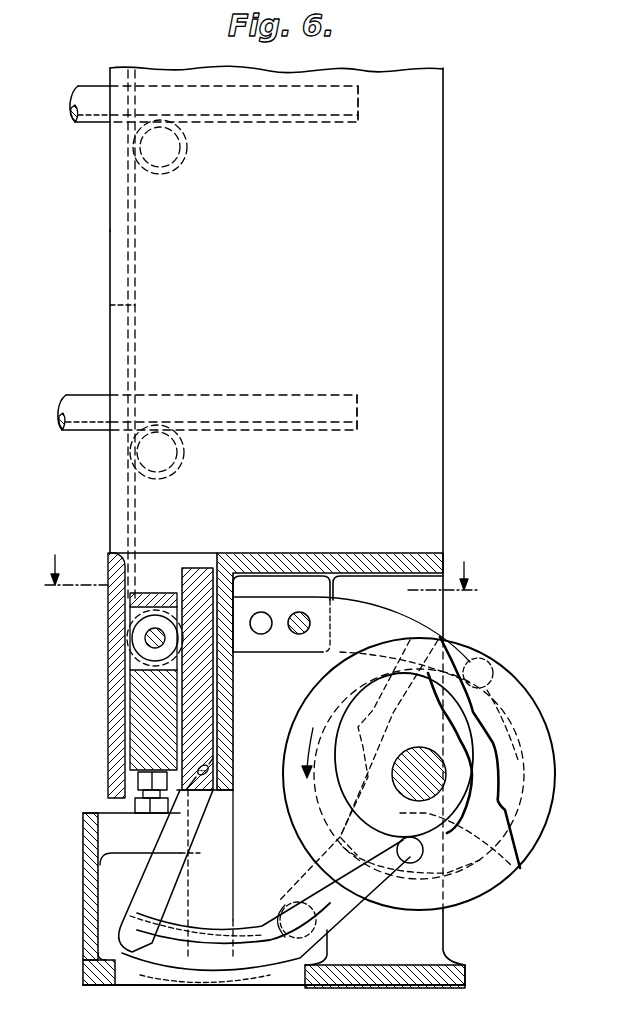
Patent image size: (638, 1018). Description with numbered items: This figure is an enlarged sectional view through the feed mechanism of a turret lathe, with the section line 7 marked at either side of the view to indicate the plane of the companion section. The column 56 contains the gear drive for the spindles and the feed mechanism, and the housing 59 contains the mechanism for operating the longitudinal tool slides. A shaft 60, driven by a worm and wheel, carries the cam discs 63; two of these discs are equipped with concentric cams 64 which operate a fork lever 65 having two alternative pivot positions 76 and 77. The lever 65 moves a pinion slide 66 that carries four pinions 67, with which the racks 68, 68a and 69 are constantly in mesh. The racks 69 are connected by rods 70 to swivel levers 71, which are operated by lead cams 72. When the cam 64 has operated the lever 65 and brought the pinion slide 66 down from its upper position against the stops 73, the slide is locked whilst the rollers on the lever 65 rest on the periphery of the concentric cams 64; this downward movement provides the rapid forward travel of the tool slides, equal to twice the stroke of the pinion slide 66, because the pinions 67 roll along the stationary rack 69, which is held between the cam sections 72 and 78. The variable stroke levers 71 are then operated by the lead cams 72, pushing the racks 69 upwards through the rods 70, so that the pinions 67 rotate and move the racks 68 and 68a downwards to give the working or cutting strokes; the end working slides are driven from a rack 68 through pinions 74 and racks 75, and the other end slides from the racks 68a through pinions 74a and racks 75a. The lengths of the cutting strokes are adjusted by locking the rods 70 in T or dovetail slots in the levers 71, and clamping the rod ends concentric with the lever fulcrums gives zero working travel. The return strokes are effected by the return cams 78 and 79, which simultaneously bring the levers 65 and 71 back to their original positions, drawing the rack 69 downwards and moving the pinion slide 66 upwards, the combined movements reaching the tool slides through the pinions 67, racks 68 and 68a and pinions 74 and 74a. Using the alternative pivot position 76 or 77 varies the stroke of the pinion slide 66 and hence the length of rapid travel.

The section line 7- 7 is at (258, 573).
The column 56 is at (287, 525).
The housing 59 is at (422, 602).
The shaft 60 is at (422, 757).
The cam disc 63 is at (490, 868).
The cam 64 is at (512, 768).
The fork lever 65 is at (395, 628).
The pinion slide 66 is at (140, 690).
The pinion 67 is at (135, 638).
The rack 68 is at (110, 305).
The rack 68a is at (110, 230).
The rack 69 is at (192, 743).
The rod 70 is at (167, 850).
The swivel lever 71 is at (337, 915).
The lead cam 72 is at (532, 857).
The stop 73 is at (133, 782).
The pinion 74 is at (160, 438).
The pinion 74a is at (187, 150).
The rack 75 is at (320, 412).
The rack 75a is at (358, 122).
The pivot position 76 is at (261, 612).
The pivot position 77 is at (300, 612).
The return cam 78 is at (493, 737).
The return cam 79 is at (308, 698).